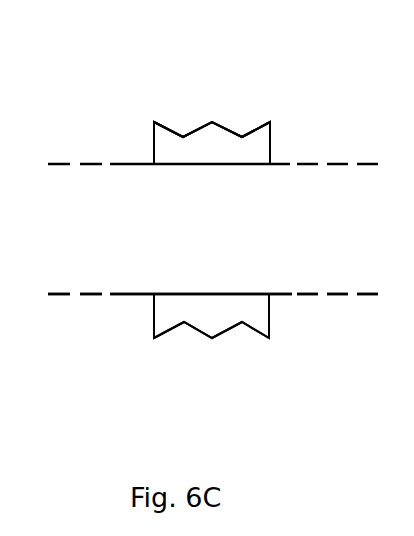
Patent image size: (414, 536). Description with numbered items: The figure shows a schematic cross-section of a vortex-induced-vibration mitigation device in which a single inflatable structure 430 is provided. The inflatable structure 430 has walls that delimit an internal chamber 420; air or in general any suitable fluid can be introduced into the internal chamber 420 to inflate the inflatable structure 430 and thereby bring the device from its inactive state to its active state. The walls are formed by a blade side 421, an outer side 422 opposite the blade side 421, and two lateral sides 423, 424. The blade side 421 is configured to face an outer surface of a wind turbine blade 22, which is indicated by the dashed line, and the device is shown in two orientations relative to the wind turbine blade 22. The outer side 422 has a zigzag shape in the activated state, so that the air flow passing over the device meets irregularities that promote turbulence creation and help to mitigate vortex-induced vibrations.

The wind turbine blade 22 is at (77, 280).
The internal chamber 420 is at (218, 148).
The blade side 421 is at (173, 167).
The outer side 422 is at (168, 127).
The lateral side 423 is at (152, 147).
The lateral side 424 is at (270, 152).
The inflatable structure 430 is at (287, 111).